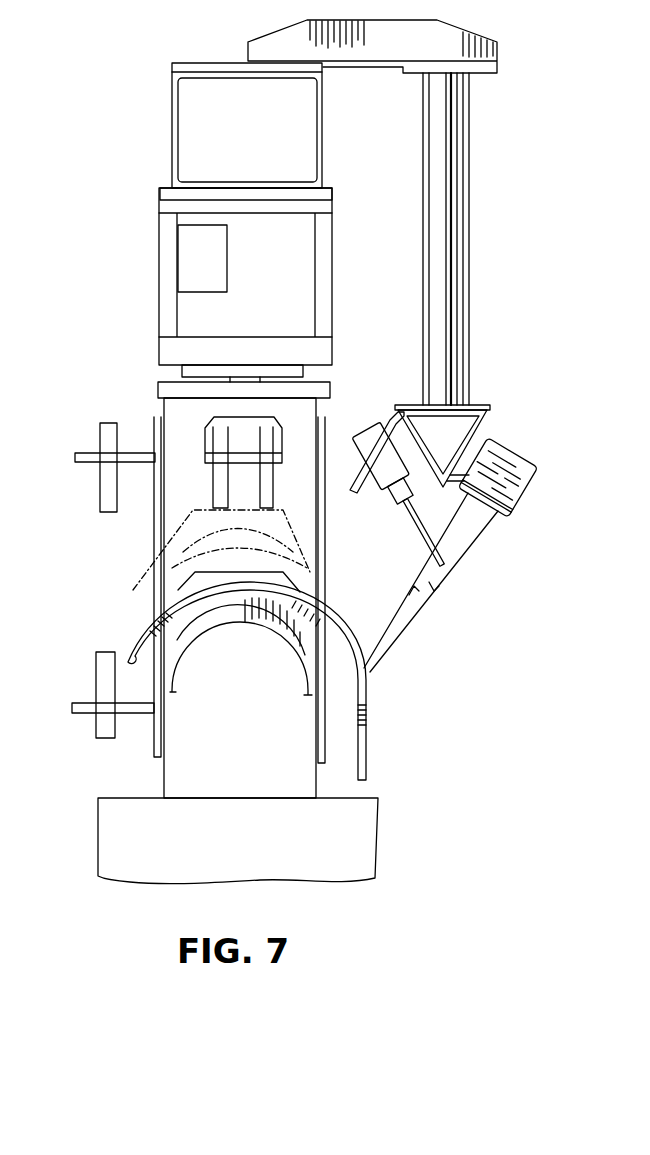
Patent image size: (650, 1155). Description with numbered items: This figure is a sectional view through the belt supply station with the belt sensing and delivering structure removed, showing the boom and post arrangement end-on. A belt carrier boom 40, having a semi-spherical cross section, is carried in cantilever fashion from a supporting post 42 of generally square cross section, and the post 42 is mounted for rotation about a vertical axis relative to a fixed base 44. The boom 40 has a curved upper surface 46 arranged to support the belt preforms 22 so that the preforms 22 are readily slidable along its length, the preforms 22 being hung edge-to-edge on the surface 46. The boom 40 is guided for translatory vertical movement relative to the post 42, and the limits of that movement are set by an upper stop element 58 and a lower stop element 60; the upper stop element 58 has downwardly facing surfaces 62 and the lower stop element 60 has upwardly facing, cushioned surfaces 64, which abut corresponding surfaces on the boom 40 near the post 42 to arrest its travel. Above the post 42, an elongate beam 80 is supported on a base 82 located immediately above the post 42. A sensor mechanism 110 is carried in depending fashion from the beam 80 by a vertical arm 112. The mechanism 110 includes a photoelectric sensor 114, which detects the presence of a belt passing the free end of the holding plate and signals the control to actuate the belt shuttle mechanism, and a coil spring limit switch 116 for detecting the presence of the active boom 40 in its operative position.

The belt preform 22 is at (368, 740).
The belt carrier boom 40 is at (165, 633).
The supporting post 42 is at (258, 743).
The fixed base 44 is at (258, 845).
The curved upper surface 46 is at (213, 559).
The upper stop element 58 is at (105, 483).
The lower stop element 60 is at (98, 675).
The downwardly facing surfaces 62 is at (107, 513).
The cushioned surfaces 64 is at (108, 650).
The elongate beam 80 is at (318, 144).
The base 82 is at (302, 277).
The sensor mechanism 110 is at (503, 393).
The vertical arm 112 is at (452, 252).
The photoelectric sensor 114 is at (520, 503).
The coil spring limit switch 116 is at (325, 518).